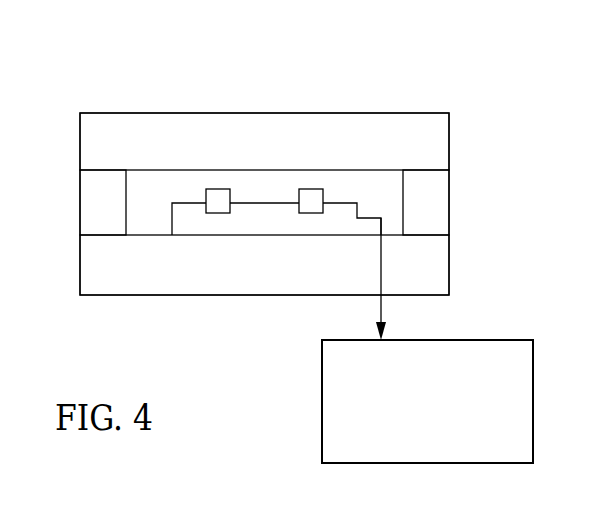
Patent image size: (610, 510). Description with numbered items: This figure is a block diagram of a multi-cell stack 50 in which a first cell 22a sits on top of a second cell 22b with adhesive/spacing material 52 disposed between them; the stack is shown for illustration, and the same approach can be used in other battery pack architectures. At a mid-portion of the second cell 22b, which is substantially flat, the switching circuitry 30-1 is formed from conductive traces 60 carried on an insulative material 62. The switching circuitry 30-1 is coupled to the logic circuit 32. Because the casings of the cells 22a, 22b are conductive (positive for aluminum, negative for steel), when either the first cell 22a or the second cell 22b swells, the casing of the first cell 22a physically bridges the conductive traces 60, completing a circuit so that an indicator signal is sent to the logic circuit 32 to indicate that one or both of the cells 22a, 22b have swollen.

The multi-cell stack 50 is at (534, 74).
The first cell 22a is at (449, 140).
The second cell 22b is at (449, 265).
The adhesive/spacing material 52 is at (80, 205).
The conductive traces 60 is at (218, 189).
The insulative material 62 is at (170, 217).
The switching circuitry 30-1 is at (350, 180).
The logic circuit 32 is at (322, 400).